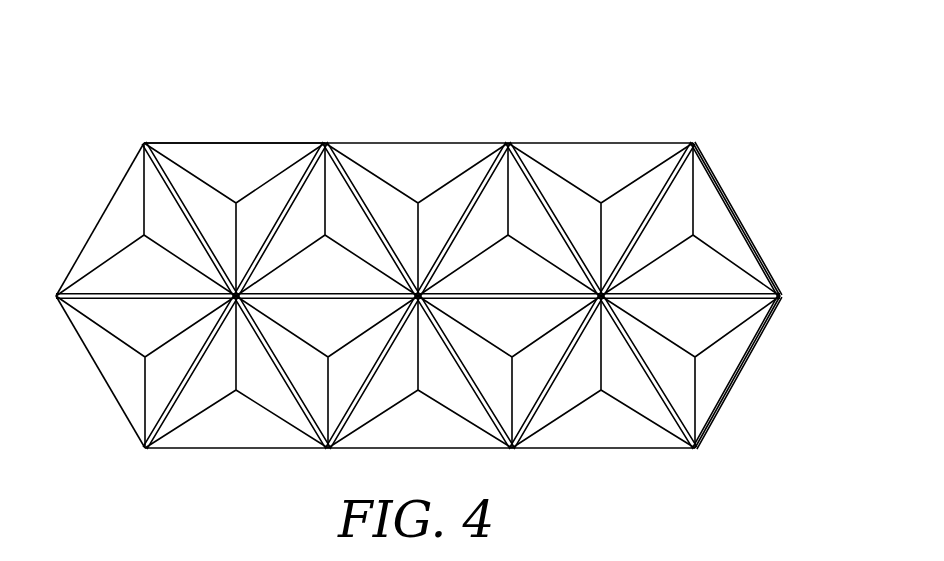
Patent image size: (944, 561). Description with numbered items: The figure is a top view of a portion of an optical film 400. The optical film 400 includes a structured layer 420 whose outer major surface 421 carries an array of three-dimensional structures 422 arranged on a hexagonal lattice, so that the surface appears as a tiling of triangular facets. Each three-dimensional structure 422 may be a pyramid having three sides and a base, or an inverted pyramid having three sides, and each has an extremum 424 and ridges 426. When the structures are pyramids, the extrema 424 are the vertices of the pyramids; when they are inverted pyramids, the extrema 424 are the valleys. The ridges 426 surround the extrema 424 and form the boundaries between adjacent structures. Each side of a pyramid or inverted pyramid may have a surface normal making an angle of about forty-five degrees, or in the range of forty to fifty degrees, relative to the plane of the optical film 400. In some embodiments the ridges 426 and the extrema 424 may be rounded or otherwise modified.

The optical film 400 is at (713, 67).
The structured layer 420 is at (713, 210).
The outer major surface 421 is at (593, 160).
The three-dimensional structures 422 is at (188, 153).
The extrema 424 is at (235, 203).
The ridges 426 is at (290, 185).